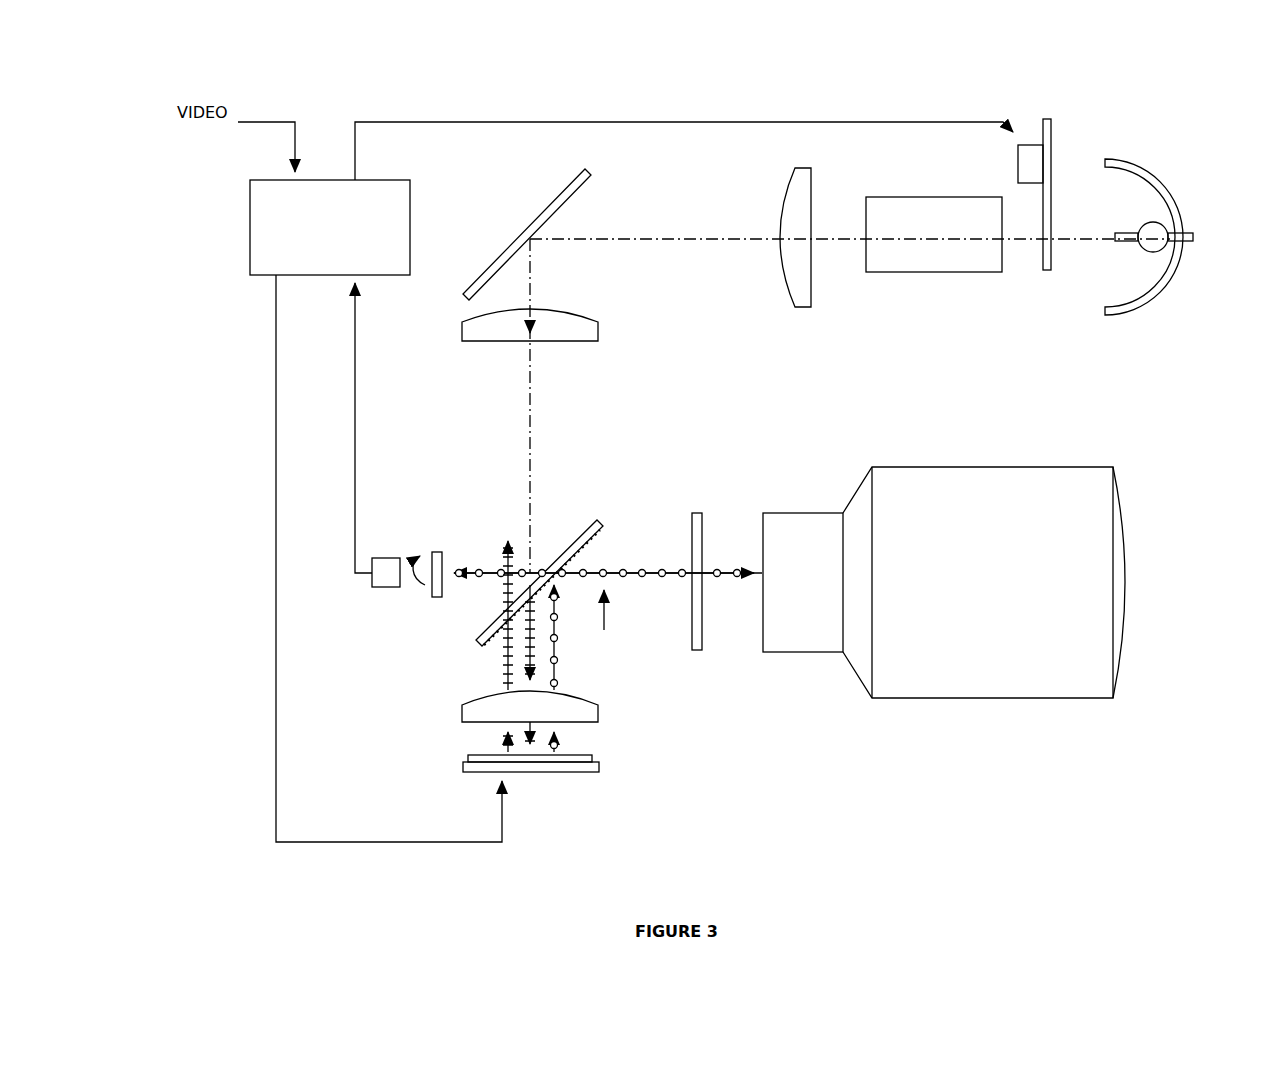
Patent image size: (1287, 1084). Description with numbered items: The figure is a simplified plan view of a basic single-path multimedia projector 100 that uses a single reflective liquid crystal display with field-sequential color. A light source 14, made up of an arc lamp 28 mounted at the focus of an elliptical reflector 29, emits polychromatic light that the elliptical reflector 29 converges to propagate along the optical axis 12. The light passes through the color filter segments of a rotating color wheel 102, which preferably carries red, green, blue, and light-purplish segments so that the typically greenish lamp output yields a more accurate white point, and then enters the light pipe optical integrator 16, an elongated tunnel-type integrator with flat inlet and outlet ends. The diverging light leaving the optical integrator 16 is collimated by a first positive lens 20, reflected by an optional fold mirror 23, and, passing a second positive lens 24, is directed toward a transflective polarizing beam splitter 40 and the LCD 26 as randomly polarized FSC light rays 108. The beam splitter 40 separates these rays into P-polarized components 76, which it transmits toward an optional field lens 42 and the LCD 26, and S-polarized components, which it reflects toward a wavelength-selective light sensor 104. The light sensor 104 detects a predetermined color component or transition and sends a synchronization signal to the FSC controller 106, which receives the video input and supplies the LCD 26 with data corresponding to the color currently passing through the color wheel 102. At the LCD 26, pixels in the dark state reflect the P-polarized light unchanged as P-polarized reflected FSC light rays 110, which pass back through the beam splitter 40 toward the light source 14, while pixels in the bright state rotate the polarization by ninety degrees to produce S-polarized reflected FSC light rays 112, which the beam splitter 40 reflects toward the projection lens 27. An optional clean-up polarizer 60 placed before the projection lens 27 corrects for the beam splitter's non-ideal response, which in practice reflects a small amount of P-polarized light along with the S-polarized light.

The optical axis 12 is at (678, 238).
The light source 14 is at (1174, 229).
The light pipe optical integrator 16 is at (925, 210).
The first positive lens 20 is at (803, 180).
The fold mirror 23 is at (560, 196).
The second positive lens 24 is at (578, 333).
The reflective liquid crystal display 26 is at (470, 765).
The projection lens 27 is at (1000, 694).
The arc lamp 28 is at (1150, 240).
The elliptical reflector 29 is at (1168, 276).
The transflective polarizing beam splitter 40 is at (600, 528).
The field lens 42 is at (472, 708).
The clean-up polarizer 60 is at (697, 648).
The P-polarized components 76 is at (546, 658).
The single-path multimedia projector 100 is at (974, 610).
The color wheel 102 is at (1048, 132).
The wavelength-selective light sensor 104 is at (382, 568).
The FSC controller 106 is at (270, 190).
The randomly polarized FSC light rays 108 is at (539, 447).
The P-polarized reflected FSC light rays 110 is at (503, 556).
The S-polarized reflected FSC light rays 112 is at (565, 636).